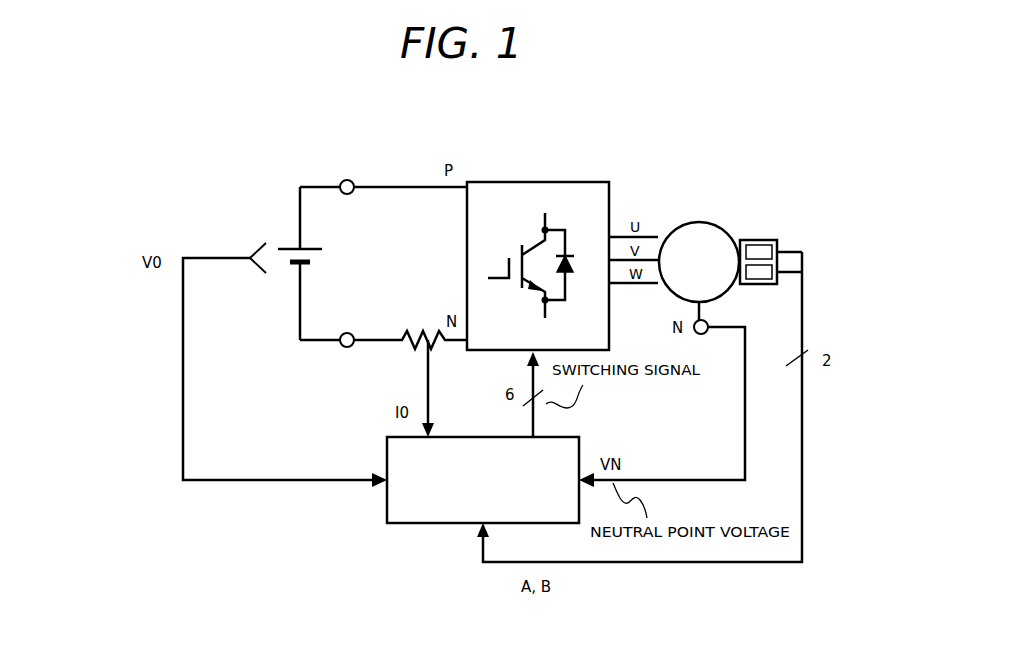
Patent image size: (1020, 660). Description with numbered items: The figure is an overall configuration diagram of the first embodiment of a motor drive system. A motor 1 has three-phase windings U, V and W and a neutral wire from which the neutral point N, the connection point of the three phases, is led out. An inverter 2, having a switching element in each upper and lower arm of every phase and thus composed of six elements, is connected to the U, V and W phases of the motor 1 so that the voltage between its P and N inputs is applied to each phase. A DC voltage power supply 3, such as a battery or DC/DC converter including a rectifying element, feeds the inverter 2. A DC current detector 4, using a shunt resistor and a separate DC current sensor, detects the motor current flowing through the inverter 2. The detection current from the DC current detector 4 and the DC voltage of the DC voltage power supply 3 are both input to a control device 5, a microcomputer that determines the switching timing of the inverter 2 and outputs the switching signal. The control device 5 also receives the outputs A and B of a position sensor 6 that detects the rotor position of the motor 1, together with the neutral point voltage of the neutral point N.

The motor 1 is at (698, 222).
The inverter 2 is at (565, 181).
The DC voltage power supply 3 is at (289, 246).
The DC current detector 4 is at (424, 334).
The control device 5 is at (483, 480).
The position sensor 6 is at (797, 219).